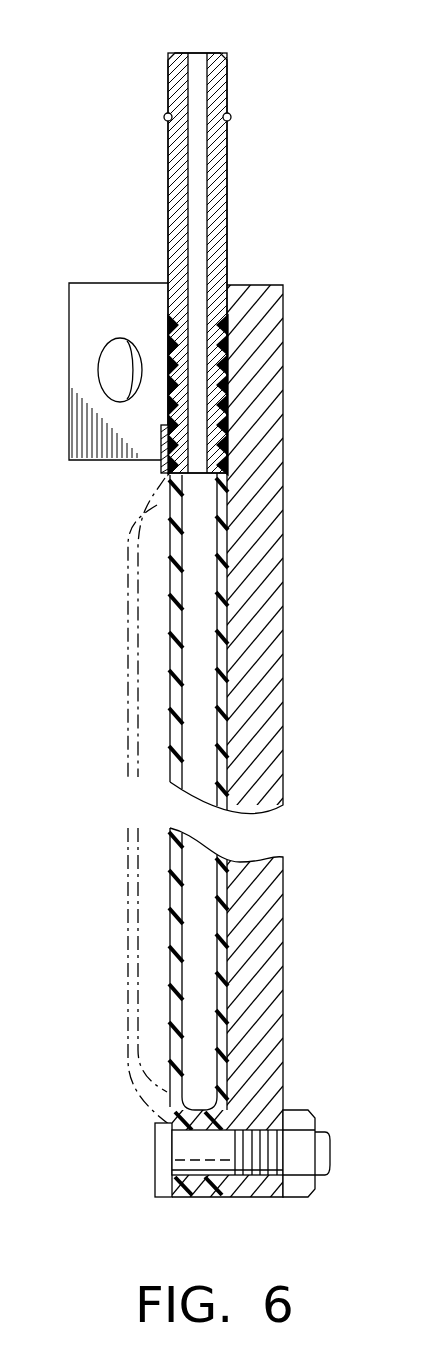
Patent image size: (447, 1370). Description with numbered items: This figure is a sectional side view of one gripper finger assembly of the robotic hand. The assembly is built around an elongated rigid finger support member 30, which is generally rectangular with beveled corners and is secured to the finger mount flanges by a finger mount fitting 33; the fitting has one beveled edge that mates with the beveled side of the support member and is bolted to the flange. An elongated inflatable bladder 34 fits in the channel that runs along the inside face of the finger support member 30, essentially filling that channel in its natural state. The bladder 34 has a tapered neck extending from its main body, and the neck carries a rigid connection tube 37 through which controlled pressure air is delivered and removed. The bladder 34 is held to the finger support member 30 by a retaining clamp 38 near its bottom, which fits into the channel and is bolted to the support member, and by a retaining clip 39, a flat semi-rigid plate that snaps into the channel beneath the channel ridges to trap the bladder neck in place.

The finger support member 30 is at (233, 623).
The finger mount fitting 33 is at (105, 292).
The inflatable bladder 34 is at (170, 700).
The connection tube 37 is at (170, 181).
The retaining clamp 38 is at (160, 1152).
The retaining clip 39 is at (160, 446).